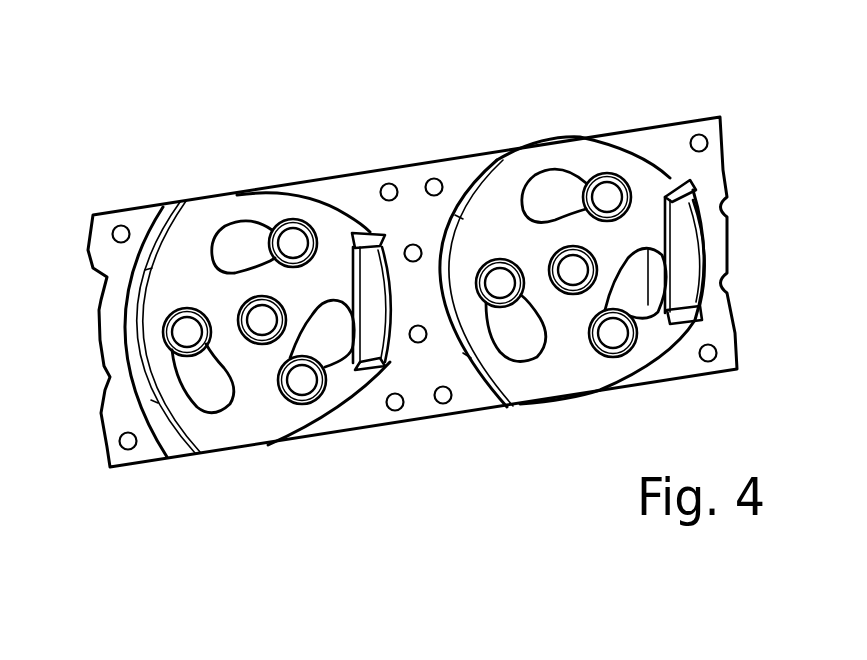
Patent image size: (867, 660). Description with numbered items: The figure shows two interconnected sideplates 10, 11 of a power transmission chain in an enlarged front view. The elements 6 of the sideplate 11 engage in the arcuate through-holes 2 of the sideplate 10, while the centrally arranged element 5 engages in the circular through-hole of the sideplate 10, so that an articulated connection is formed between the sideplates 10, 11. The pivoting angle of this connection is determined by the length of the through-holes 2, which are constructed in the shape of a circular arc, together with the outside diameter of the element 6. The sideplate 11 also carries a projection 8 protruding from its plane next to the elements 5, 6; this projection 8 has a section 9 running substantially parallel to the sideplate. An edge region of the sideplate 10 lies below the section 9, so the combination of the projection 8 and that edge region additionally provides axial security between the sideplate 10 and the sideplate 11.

The through-hole 2 is at (227, 248).
The element 5 is at (260, 335).
The element 6 is at (281, 220).
The projection 8 is at (372, 237).
The section 9 is at (354, 236).
The sideplate 10 is at (106, 270).
The sideplate 11 is at (500, 172).